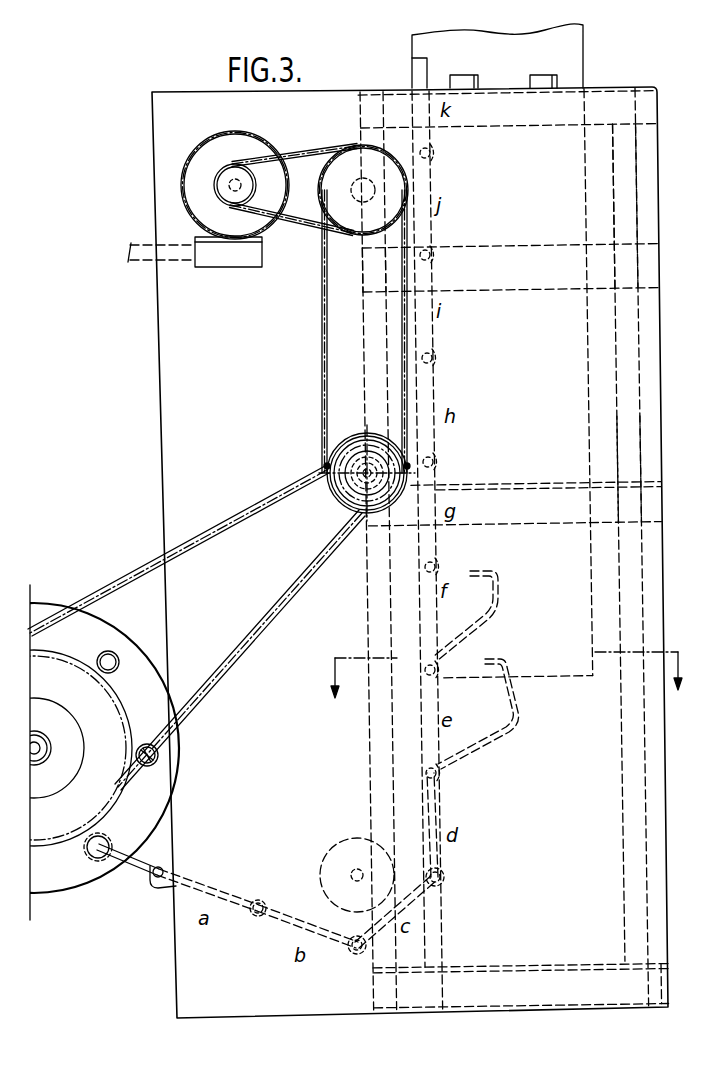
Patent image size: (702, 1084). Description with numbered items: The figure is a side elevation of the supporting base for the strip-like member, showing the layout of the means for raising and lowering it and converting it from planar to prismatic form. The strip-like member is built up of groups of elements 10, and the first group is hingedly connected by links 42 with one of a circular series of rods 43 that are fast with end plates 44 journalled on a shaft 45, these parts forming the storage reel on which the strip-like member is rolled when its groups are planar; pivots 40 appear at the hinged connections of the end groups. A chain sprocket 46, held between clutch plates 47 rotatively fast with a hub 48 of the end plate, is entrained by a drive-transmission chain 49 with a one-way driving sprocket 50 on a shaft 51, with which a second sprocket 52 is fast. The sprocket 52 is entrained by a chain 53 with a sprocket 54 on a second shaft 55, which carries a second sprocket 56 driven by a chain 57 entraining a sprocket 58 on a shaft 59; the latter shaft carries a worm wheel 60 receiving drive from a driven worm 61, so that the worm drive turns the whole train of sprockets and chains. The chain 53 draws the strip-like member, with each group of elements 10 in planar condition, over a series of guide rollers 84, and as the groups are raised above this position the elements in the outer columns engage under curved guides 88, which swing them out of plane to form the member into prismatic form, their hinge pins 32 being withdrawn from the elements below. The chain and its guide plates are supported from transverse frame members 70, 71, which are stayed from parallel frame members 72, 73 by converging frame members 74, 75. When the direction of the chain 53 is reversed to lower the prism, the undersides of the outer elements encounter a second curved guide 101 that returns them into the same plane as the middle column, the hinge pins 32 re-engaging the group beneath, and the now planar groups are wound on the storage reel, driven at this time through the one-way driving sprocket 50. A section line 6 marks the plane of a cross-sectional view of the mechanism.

The section line 6- 6 is at (504, 658).
The element 10 is at (440, 372).
The hinge pin 32 is at (356, 953).
The pivot pin 40 is at (156, 879).
The link 42 is at (148, 858).
The rod 43 is at (144, 742).
The end plate 44 is at (73, 892).
The shaft 45 is at (36, 762).
The chain sprocket 46 is at (72, 659).
The clutch plate 47 is at (75, 728).
The hub 48 is at (52, 748).
The drive-transmission chain 49 is at (150, 572).
The one-way driving sprocket 50 is at (345, 500).
The shaft 51 is at (324, 466).
The second sprocket 52 is at (357, 440).
The chain 53 is at (321, 345).
The sprocket 54 is at (322, 224).
The second shaft 55 is at (355, 175).
The second sprocket 56 is at (385, 164).
The chain 57 is at (303, 153).
The sprocket 58 is at (229, 195).
The shaft 59 is at (235, 176).
The worm wheel 60 is at (213, 148).
The driven worm 61 is at (236, 266).
The transverse frame member 70 is at (368, 293).
The transverse frame member 71 is at (367, 517).
The parallel frame member 72 is at (646, 243).
The parallel frame member 73 is at (651, 485).
The converging frame member 74 is at (512, 250).
The converging frame member 75 is at (516, 487).
The guide roller 84 is at (345, 846).
The curved guide 88 is at (496, 600).
The second curved guide 101 is at (520, 728).